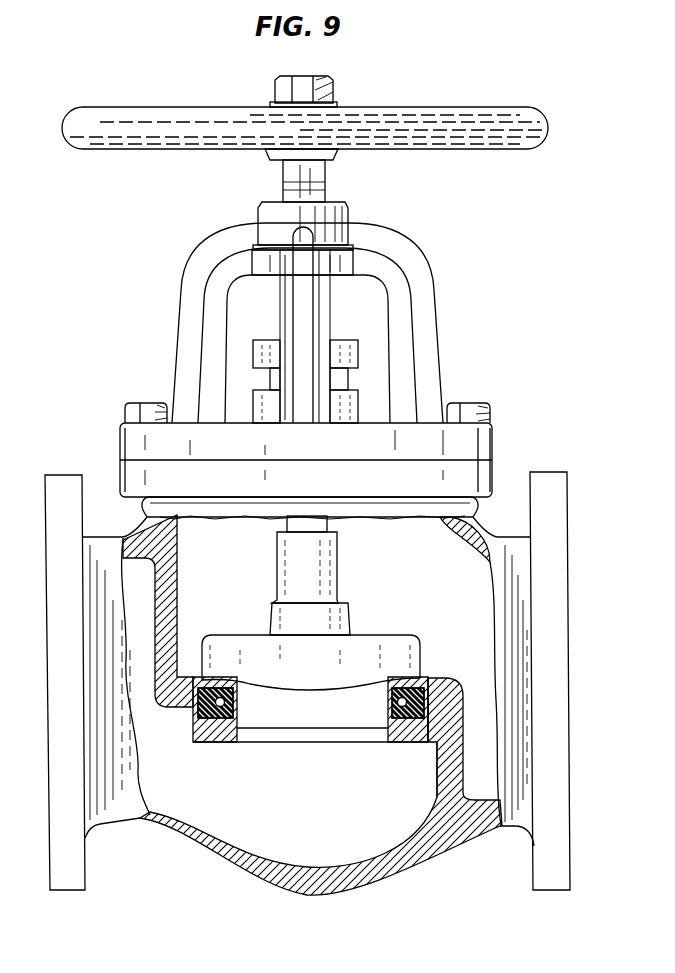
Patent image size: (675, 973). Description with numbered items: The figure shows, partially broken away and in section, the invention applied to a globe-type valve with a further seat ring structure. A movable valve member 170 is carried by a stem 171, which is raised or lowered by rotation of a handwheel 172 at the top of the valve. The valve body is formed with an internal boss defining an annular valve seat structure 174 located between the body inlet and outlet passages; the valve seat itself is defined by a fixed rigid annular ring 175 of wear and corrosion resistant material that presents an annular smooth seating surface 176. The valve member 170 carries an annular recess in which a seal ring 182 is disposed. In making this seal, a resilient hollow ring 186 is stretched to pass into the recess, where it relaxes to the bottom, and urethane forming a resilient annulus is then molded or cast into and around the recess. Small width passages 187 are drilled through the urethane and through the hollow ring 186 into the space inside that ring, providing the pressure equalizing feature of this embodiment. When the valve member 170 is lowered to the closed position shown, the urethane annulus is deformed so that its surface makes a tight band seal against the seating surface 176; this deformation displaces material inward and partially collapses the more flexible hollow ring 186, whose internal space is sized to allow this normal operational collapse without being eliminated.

The movable valve member 170 is at (368, 658).
The stem 171 is at (327, 518).
The handwheel 172 is at (512, 118).
The annular valve seat structure 174 is at (447, 688).
The fixed rigid annular ring 175 is at (434, 724).
The annular smooth seating surface 176 is at (214, 740).
The seal ring 182 is at (216, 712).
The resilient hollow ring 186 is at (401, 712).
The passages 187 is at (217, 695).